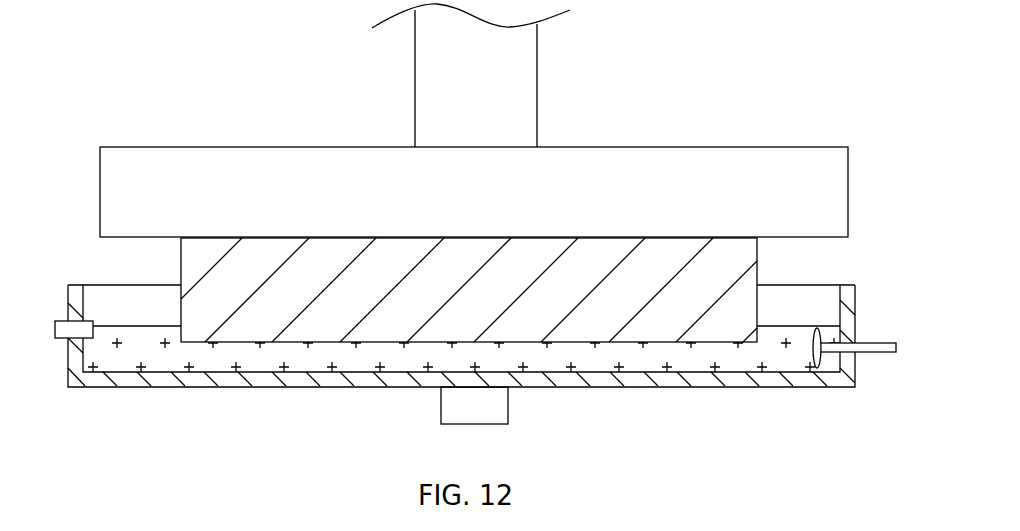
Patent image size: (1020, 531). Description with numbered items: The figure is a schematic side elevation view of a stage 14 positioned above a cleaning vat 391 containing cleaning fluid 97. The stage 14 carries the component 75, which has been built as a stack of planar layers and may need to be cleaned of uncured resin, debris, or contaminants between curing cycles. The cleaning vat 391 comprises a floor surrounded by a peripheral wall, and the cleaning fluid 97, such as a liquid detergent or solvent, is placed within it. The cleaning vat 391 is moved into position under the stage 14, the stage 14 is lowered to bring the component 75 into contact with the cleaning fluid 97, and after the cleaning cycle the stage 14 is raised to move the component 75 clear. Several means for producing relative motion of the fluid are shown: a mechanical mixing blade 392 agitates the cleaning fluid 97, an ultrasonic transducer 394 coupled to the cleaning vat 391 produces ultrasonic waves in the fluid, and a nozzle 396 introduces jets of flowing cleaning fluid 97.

The stage 14 is at (455, 203).
The component 75 is at (200, 263).
The cleaning fluid 97 is at (786, 338).
The cleaning vat 391 is at (131, 375).
The mechanical mixing blade 392 is at (872, 353).
The ultrasonic transducer 394 is at (455, 411).
The nozzle 396 is at (77, 327).